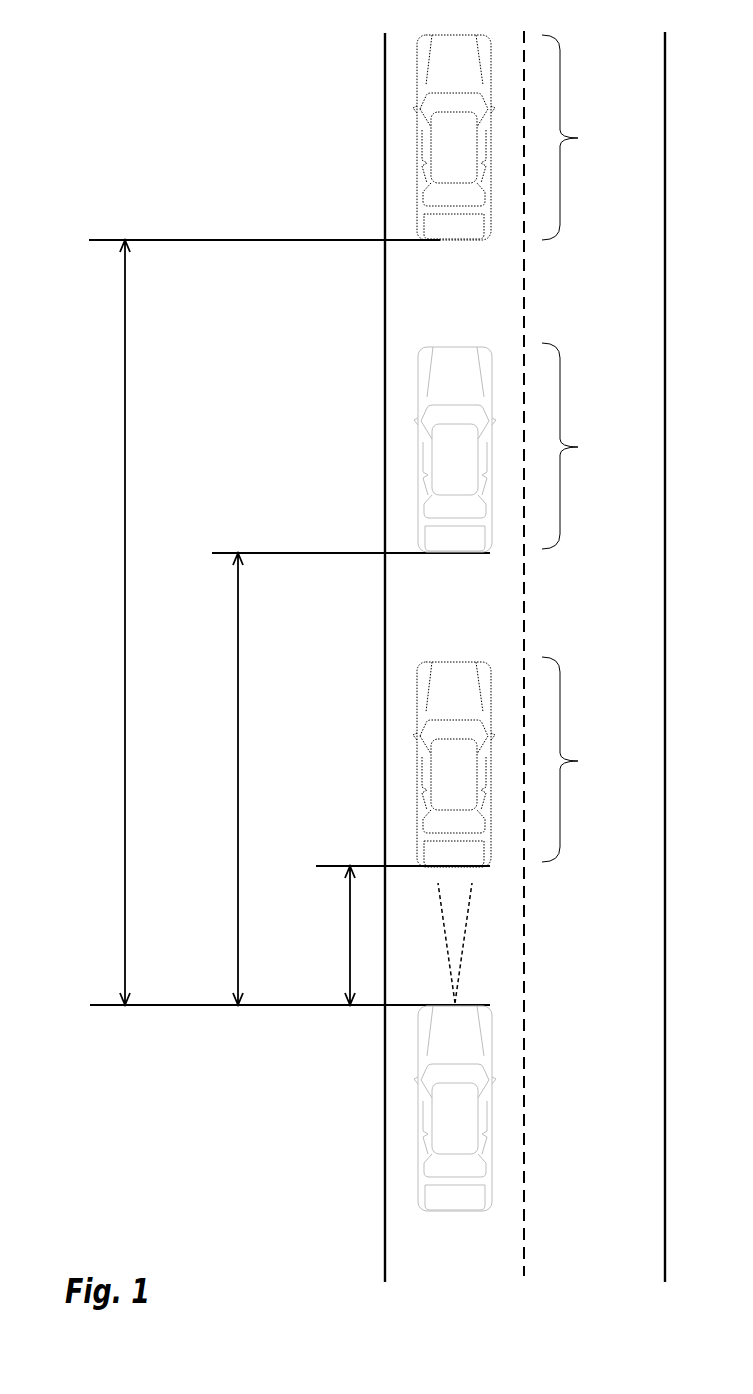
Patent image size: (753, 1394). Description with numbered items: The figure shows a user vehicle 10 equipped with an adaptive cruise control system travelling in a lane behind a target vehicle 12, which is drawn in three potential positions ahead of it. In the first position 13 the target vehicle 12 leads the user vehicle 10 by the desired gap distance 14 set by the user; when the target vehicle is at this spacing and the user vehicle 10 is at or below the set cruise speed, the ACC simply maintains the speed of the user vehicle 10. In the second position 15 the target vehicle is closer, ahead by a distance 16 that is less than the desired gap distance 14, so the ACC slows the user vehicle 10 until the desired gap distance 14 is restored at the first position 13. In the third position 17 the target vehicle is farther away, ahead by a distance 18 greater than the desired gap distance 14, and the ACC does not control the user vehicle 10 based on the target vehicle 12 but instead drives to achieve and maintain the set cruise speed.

The user vehicle 10 is at (470, 1215).
The target vehicle 12 is at (445, 33).
The first position 13 is at (580, 446).
The desired gap distance 14 is at (237, 757).
The second position 15 is at (581, 759).
The distance 16 is at (350, 914).
The third position 17 is at (583, 137).
The distance 18 is at (125, 370).